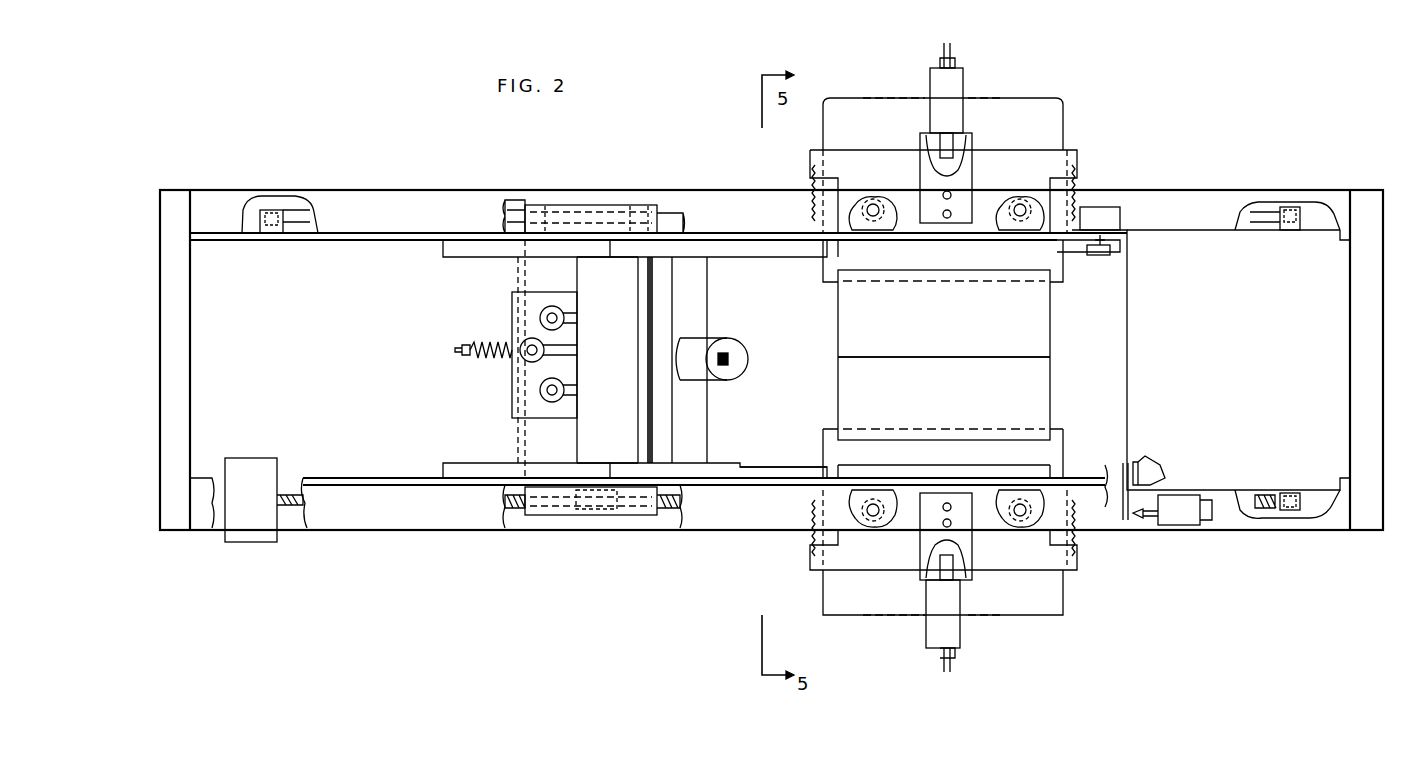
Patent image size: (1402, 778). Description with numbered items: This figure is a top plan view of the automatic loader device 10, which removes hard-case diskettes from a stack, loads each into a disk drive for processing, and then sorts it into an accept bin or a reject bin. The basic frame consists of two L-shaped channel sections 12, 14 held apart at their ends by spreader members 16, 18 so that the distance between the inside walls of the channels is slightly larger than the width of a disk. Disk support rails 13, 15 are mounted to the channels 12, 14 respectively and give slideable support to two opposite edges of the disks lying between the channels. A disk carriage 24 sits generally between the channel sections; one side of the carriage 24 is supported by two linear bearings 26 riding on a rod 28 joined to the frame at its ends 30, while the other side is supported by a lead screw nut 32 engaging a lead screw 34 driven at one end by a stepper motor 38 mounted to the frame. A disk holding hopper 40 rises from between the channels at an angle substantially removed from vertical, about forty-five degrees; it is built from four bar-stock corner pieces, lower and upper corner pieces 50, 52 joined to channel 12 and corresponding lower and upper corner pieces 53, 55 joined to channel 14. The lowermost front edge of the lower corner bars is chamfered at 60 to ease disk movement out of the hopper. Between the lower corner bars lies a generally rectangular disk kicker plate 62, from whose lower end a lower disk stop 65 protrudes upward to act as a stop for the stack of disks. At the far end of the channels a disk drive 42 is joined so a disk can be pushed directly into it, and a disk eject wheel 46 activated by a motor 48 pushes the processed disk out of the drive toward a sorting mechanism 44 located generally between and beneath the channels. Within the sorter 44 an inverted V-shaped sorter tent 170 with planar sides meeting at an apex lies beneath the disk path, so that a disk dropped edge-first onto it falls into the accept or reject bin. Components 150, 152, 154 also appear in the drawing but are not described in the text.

The device 10 is at (630, 614).
The L-shaped channel section 12 is at (488, 205).
The disk support rail 13 is at (750, 253).
The L-shaped channel section 14 is at (478, 515).
The disk support rail 15 is at (785, 470).
The spreader member 16 is at (180, 352).
The spreader member 18 is at (1372, 318).
The disk carriage 24 is at (556, 282).
The linear bearing 26 is at (650, 208).
The rod 28 is at (668, 212).
The rod end 30 is at (272, 198).
The lead screw nut 32 is at (615, 508).
The lead screw 34 is at (668, 512).
The stepper motor 38 is at (263, 507).
The disk holding hopper 40 is at (489, 402).
The disk drive 42 is at (1218, 302).
The sorting mechanism 44 is at (838, 350).
The disk eject wheel 46 is at (1106, 255).
The motor 48 is at (1098, 210).
The corner piece 50 is at (460, 258).
The corner piece 52 is at (632, 256).
The corner piece 53 is at (465, 462).
The corner piece 55 is at (628, 462).
The chamfer 60 is at (642, 337).
The disk kicker plate 62 is at (616, 318).
The lower disk stop 65 is at (650, 362).
The motor 150 is at (1170, 525).
The mounting plate 152 is at (1123, 520).
The bracket 154 is at (1148, 466).
The sorter tent 170 is at (840, 393).